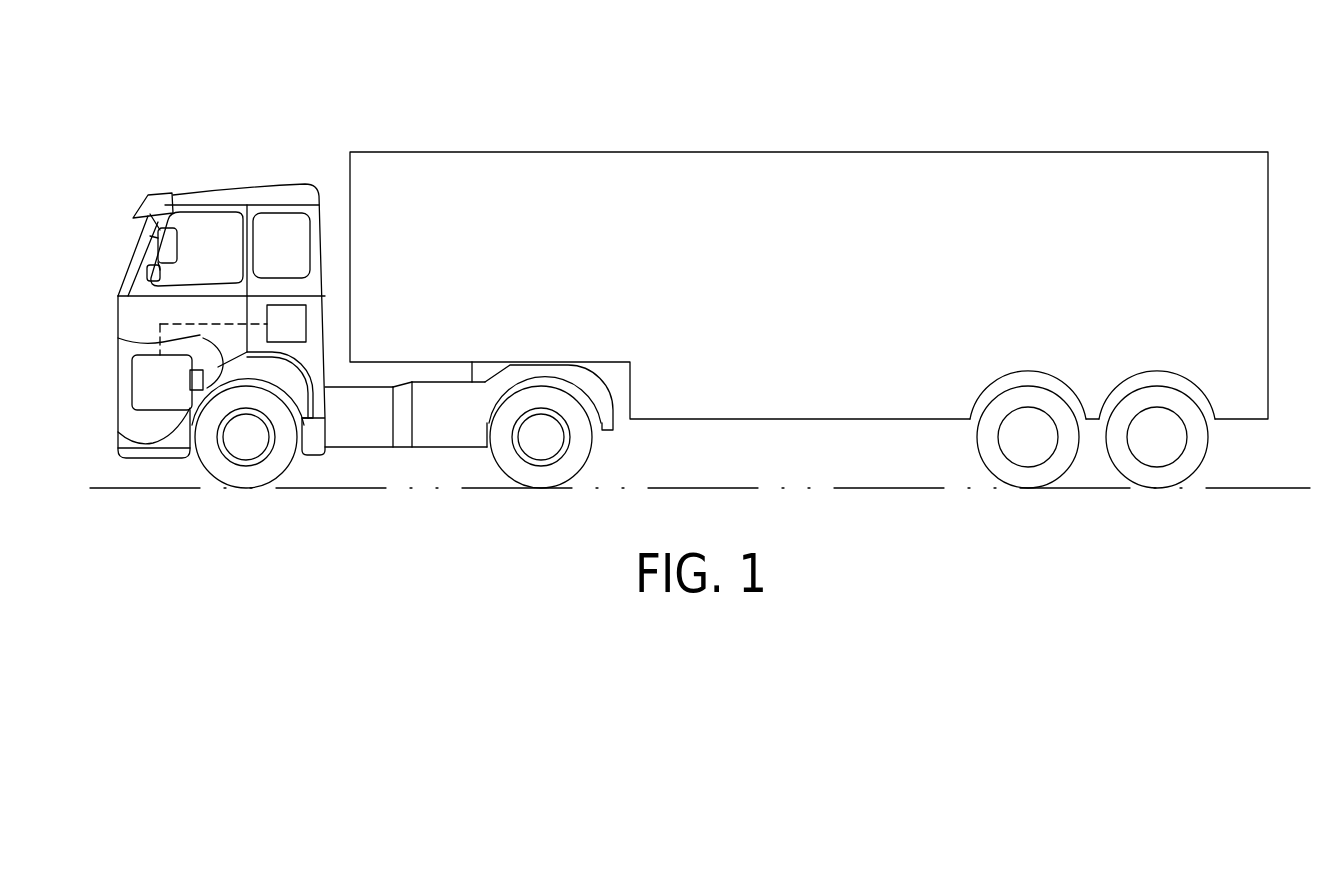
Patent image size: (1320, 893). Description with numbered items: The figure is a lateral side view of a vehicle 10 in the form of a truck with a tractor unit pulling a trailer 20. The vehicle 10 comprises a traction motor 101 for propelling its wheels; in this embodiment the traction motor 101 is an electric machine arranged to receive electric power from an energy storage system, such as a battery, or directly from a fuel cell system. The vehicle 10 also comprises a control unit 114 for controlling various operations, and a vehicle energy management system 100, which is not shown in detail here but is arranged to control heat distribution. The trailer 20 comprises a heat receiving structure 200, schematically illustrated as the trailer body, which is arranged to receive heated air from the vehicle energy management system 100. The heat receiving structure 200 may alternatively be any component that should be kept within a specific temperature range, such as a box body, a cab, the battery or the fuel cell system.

The vehicle 10 is at (333, 120).
The trailer 20 is at (809, 256).
The heat receiving structure 200 is at (773, 123).
The vehicle energy management system 100 is at (203, 340).
The traction motor 101 is at (163, 382).
The control unit 114 is at (285, 343).